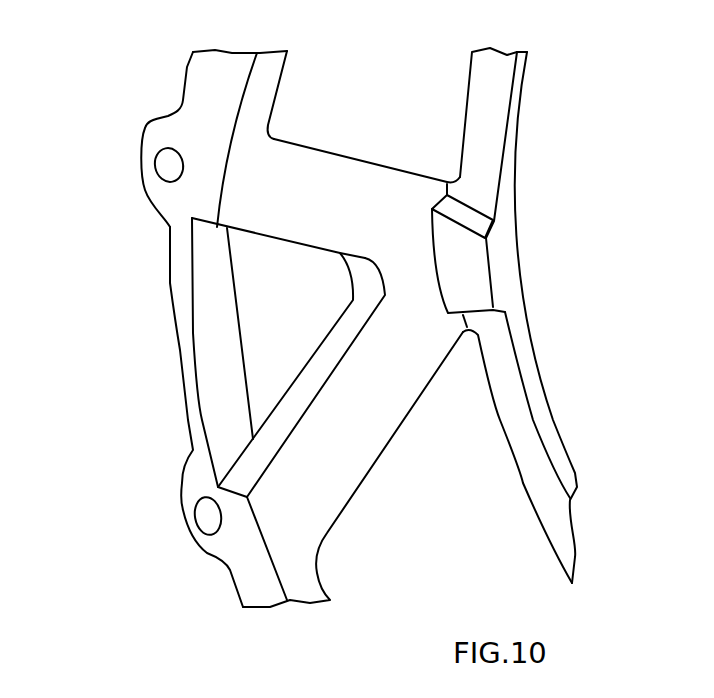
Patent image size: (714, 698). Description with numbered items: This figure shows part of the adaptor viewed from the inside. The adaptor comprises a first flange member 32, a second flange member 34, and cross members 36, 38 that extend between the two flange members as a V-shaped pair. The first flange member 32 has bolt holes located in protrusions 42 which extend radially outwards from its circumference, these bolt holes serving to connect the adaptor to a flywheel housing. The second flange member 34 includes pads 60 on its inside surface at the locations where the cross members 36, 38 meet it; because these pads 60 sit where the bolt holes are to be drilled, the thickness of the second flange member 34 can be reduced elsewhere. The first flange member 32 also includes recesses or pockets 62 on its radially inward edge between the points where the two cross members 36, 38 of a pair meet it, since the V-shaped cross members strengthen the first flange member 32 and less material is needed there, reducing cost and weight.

The first flange member 32 is at (213, 80).
The second flange member 34 is at (512, 98).
The cross member 36 is at (357, 450).
The cross member 38 is at (315, 173).
The protrusion 42 is at (140, 152).
The pad 60 is at (472, 282).
The recess 62 is at (208, 328).